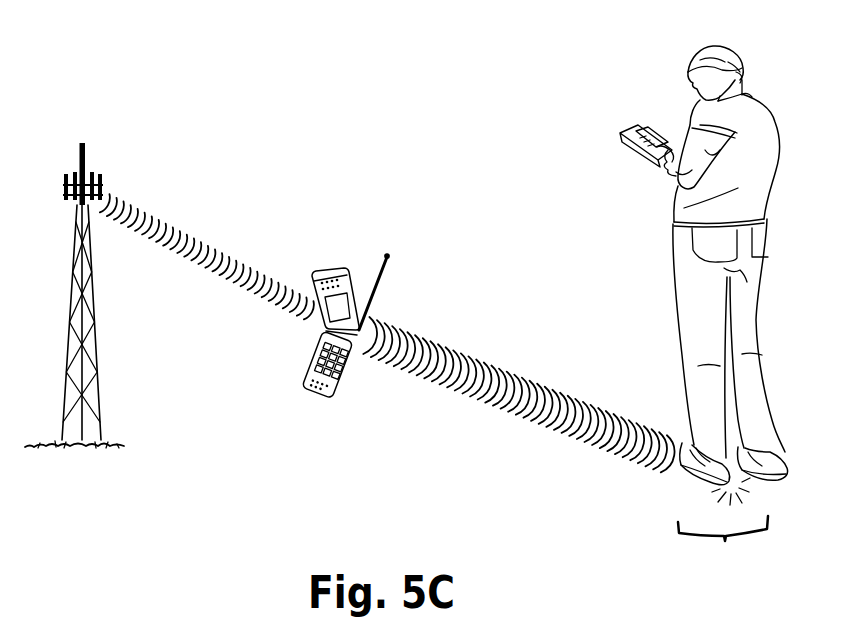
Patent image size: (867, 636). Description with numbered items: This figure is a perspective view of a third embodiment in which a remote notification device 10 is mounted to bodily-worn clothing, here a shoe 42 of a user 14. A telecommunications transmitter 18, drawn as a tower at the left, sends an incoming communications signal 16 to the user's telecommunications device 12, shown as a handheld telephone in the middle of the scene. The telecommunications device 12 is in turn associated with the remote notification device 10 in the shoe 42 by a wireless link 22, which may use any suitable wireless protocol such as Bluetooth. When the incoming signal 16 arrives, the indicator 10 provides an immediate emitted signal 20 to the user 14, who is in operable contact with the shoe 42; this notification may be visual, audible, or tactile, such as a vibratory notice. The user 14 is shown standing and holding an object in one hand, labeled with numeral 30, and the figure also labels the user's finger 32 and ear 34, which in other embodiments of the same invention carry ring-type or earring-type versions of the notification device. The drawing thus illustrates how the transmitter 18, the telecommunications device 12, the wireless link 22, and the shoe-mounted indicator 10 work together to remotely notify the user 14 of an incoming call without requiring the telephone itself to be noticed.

The remote notification device 10 is at (732, 482).
The telecommunications device 12 is at (330, 269).
The user 14 is at (768, 102).
The incoming communications signal 16 is at (176, 221).
The telecommunications transmitter 18 is at (66, 252).
The emitted signal 20 is at (723, 544).
The wireless link 22 is at (433, 339).
The hand of user 30 is at (662, 162).
The finger 32 is at (638, 162).
The ear 34 is at (733, 77).
The shoe 42 is at (780, 465).